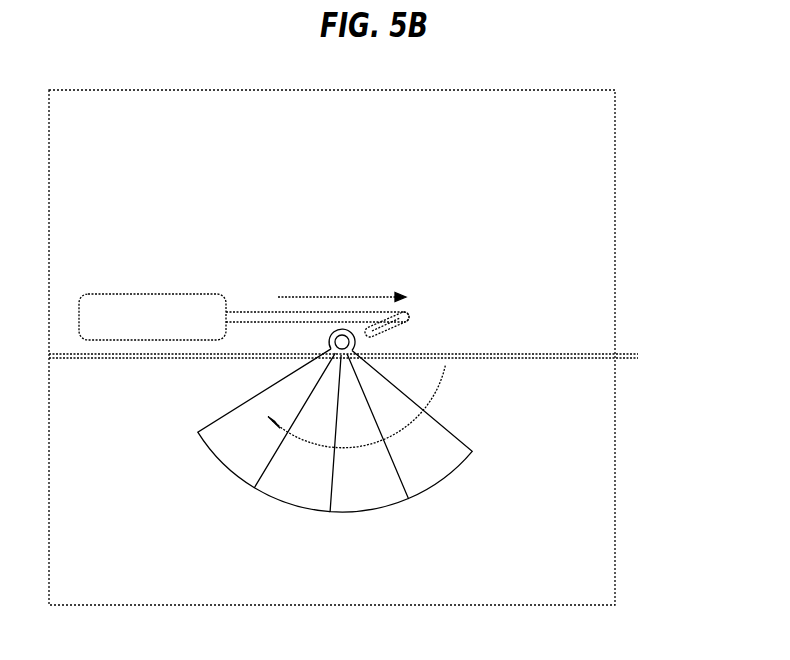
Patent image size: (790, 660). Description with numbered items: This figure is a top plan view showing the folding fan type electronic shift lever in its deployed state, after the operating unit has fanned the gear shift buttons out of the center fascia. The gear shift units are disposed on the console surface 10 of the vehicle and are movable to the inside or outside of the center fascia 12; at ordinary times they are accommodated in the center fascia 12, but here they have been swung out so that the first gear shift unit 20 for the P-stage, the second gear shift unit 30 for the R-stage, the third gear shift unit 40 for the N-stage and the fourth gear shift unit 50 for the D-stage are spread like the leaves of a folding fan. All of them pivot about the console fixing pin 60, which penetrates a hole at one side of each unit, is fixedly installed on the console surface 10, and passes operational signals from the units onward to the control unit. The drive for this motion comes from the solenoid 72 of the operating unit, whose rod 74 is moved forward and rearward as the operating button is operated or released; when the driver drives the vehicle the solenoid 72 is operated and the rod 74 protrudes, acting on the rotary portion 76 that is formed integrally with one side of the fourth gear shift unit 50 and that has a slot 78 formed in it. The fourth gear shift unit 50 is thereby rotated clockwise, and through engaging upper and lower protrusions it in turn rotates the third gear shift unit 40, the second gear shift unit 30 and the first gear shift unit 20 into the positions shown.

The console surface 10 is at (568, 442).
The center fascia 12 is at (565, 356).
The first gear shift unit 20 is at (443, 468).
The second gear shift unit 30 is at (372, 498).
The third gear shift unit 40 is at (293, 493).
The fourth gear shift unit 50 is at (230, 460).
The console fixing pin 60 is at (341, 329).
The solenoid 72 is at (147, 314).
The rod 74 is at (250, 311).
The rotary portion 76 is at (415, 312).
The slot 78 is at (394, 339).